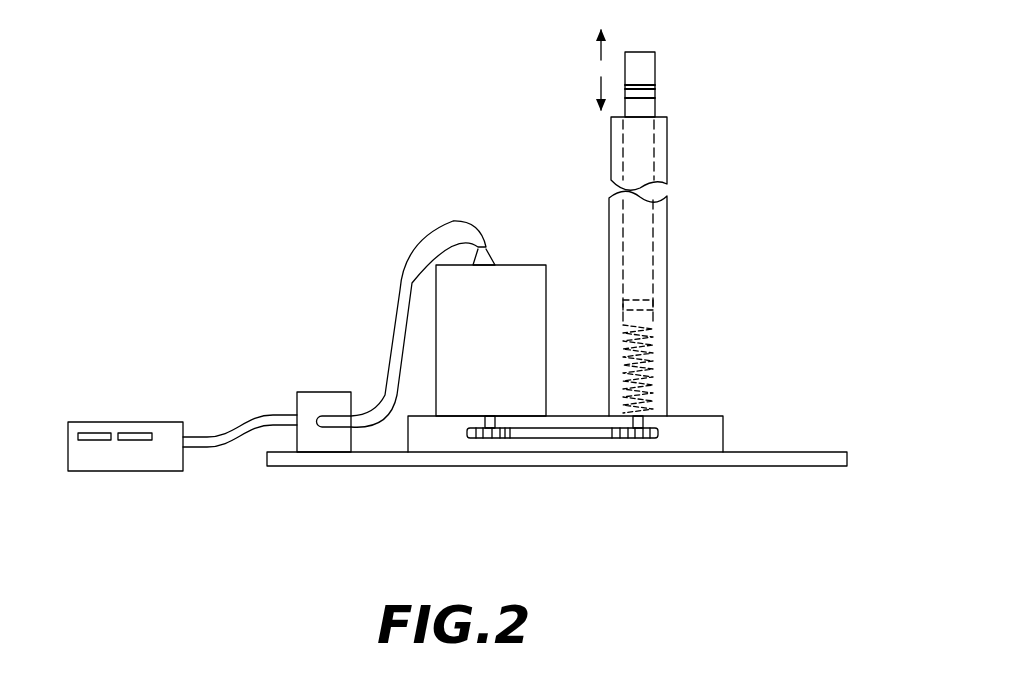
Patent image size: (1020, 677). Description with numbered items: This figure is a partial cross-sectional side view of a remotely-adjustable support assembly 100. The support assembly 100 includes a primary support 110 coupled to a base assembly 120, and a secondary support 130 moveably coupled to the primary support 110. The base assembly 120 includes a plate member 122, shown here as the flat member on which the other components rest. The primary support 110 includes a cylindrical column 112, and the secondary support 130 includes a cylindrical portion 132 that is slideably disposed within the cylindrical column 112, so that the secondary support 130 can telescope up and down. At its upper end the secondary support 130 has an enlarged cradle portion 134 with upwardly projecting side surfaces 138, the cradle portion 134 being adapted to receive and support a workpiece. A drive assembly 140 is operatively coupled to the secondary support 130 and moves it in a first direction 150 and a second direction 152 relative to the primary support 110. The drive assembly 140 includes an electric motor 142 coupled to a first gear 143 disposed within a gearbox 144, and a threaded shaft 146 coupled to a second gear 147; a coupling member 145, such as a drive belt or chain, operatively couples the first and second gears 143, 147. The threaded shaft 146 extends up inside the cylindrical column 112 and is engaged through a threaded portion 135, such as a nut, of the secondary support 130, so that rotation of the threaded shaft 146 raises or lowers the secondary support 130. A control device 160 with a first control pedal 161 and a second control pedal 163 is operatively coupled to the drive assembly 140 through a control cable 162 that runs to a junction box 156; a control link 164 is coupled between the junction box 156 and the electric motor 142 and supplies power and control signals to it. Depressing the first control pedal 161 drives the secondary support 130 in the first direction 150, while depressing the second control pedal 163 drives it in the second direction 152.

The support assembly 100 is at (224, 66).
The primary support 110 is at (700, 168).
The cylindrical column 112 is at (609, 250).
The base assembly 120 is at (848, 378).
The plate member 122 is at (833, 452).
The secondary support 130 is at (542, 54).
The cylindrical portion 132 is at (655, 107).
The cradle portion 134 is at (655, 91).
The threaded portion 135 is at (640, 300).
The side surfaces 138 is at (655, 68).
The drive assembly 140 is at (740, 374).
The electric motor 142 is at (546, 303).
The first gear 143 is at (474, 440).
The gearbox 144 is at (557, 414).
The coupling member 145 is at (557, 440).
The threaded shaft 146 is at (652, 343).
The second gear 147 is at (660, 440).
The first direction 150 is at (601, 47).
The second direction 152 is at (598, 86).
The junction box 156 is at (323, 392).
The control device 160 is at (94, 358).
The first control pedal 161 is at (88, 433).
The control cable 162 is at (250, 420).
The second control pedal 163 is at (133, 433).
The control link 164 is at (408, 257).